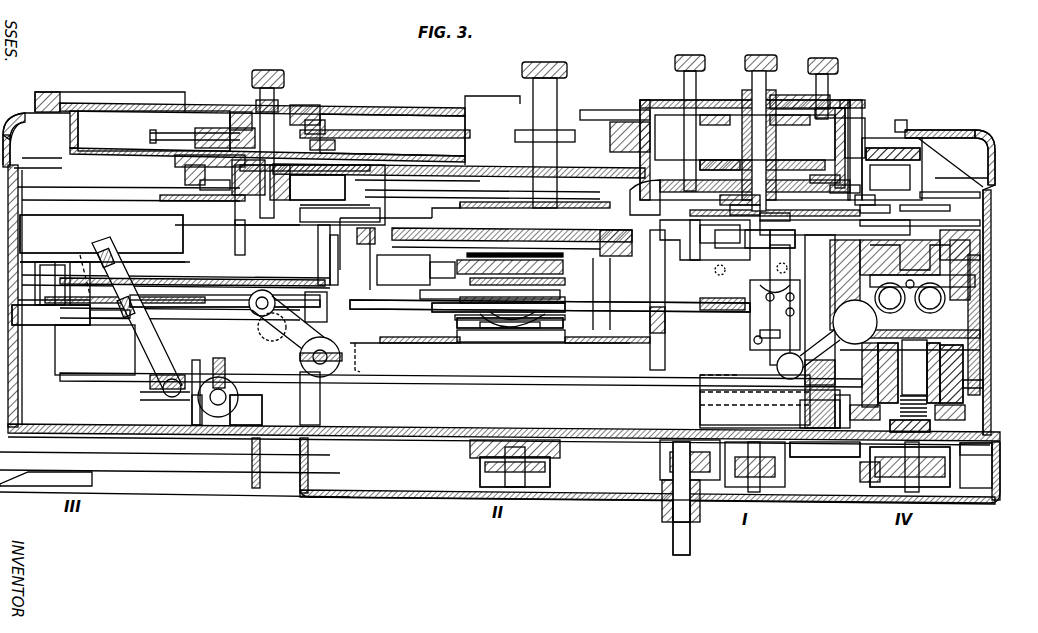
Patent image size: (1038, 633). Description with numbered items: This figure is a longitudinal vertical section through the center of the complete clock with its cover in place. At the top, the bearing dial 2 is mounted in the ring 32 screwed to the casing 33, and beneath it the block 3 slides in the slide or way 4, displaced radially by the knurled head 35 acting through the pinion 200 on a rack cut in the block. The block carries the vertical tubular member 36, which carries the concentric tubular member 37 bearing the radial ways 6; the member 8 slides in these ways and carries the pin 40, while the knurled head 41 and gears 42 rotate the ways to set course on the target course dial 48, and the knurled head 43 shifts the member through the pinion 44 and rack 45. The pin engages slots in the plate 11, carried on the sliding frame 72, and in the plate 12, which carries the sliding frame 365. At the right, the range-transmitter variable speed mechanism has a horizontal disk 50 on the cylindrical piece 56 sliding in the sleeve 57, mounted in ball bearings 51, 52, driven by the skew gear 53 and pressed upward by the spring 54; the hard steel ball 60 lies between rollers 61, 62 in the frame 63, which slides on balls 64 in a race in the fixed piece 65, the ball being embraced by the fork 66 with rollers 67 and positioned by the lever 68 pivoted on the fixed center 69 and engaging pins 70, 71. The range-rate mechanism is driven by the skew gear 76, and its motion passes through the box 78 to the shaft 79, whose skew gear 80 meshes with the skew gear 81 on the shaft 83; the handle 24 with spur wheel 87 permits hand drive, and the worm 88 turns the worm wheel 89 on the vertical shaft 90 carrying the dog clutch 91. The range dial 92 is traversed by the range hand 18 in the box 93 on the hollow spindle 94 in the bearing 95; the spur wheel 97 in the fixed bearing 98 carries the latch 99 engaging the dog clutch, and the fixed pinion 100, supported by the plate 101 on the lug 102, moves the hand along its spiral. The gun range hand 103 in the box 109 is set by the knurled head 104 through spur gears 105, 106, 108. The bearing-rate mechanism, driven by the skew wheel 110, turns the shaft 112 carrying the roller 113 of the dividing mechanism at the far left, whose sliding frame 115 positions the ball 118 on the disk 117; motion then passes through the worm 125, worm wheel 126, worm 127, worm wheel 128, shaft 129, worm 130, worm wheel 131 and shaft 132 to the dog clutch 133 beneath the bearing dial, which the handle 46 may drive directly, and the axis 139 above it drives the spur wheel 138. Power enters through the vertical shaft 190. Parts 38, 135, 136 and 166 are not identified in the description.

The bearing dial 2 is at (858, 120).
The block 3 is at (715, 165).
The slide or way 4 is at (674, 190).
The radial ways 6 is at (730, 210).
The member 8 is at (780, 216).
The plate 11 is at (782, 239).
The plate 12 is at (757, 239).
The range hand 18 is at (148, 148).
The handle 24 is at (258, 316).
The ring 32 is at (615, 112).
The casing 33 is at (482, 168).
The knurled head 35 is at (690, 113).
The vertical tubular member 36 is at (745, 137).
The tubular member 37 is at (785, 96).
The bracket 38 is at (910, 150).
The pin 40 is at (755, 239).
The knurled head 41 is at (823, 62).
The gears 42 is at (835, 100).
The knurled head 43 is at (760, 58).
The pinion 44 is at (720, 232).
The rack 45 is at (730, 200).
The handle 46 is at (790, 368).
The target course dial 48 is at (850, 100).
The horizontal disk 50 is at (500, 342).
The ball bearing 51 is at (963, 368).
The ball bearing 52 is at (932, 425).
The skew gear 53 is at (895, 485).
The spring 54 is at (995, 452).
The cylindrical piece 56 is at (950, 385).
The sleeve 57 is at (940, 400).
The hard steel ball 60 is at (520, 328).
The roller 61 is at (890, 298).
The roller 62 is at (930, 298).
The frame 63 is at (827, 339).
The balls 64 is at (965, 258).
The piece 65 is at (935, 224).
The fork 66 is at (568, 305).
The rollers 67 is at (563, 320).
The lever 68 is at (150, 340).
The fixed center 69 is at (870, 470).
The pin 70 is at (108, 250).
The pin 71 is at (90, 314).
The sliding frame 72 is at (778, 268).
The skew gear 76 is at (770, 503).
The box 78 is at (775, 315).
The shaft 79 is at (395, 325).
The skew gear 80 is at (327, 306).
The skew gear 81 is at (320, 398).
The shaft 83 is at (310, 375).
The spur wheel 87 is at (268, 340).
The worm 88 is at (360, 355).
The worm wheel 89 is at (312, 332).
The vertical shaft 90 is at (320, 266).
The dog clutch 91 is at (325, 240).
The range dial 92 is at (400, 153).
The box 93 is at (215, 135).
The hollow spindle 94 is at (238, 228).
The bearing 95 is at (218, 182).
The spur wheel 97 is at (355, 205).
The fixed bearing 98 is at (317, 185).
The latch 99 is at (372, 214).
The fixed pinion 100 is at (325, 128).
The plate 101 is at (335, 146).
The lug 102 is at (355, 182).
The gun range hand 103 is at (150, 144).
The knurled head 104 is at (272, 74).
The spur gear 105 is at (280, 106).
The spur gear 106 is at (320, 112).
The spur gear 108 is at (200, 170).
The box 109 is at (235, 115).
The skew wheel 110 is at (550, 470).
The shaft 112 is at (228, 295).
The roller 113 is at (100, 278).
The sliding frame 115 is at (178, 262).
The disk 117 is at (225, 312).
The ball 118 is at (101, 234).
The worm 125 is at (150, 388).
The worm wheel 126 is at (198, 425).
The worm 127 is at (240, 425).
The worm wheel 128 is at (218, 358).
The shaft 129 is at (262, 382).
The worm 130 is at (810, 422).
The worm wheel 131 is at (840, 432).
The shaft 132 is at (920, 208).
The dog clutch 133 is at (945, 196).
The pin 135 is at (862, 200).
The pin 136 is at (862, 210).
The spur wheel 138 is at (640, 130).
The axis 139 is at (858, 195).
The knob 166 is at (555, 66).
The vertical shaft 190 is at (690, 535).
The pinion 200 is at (642, 197).
The sliding frame 365 is at (430, 262).